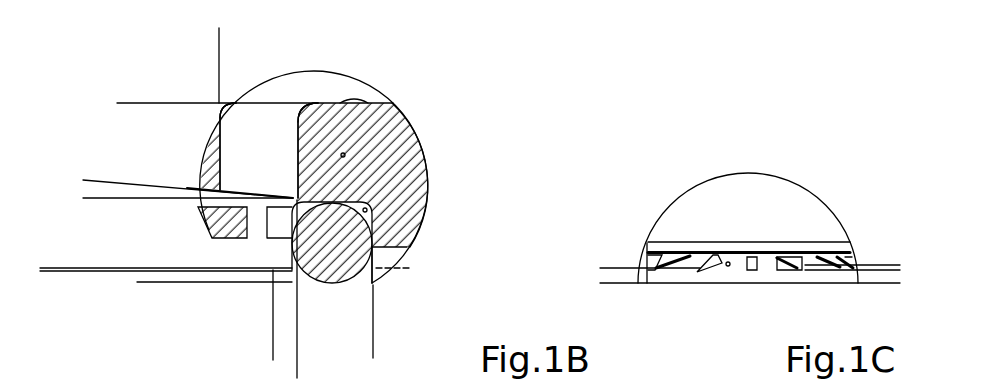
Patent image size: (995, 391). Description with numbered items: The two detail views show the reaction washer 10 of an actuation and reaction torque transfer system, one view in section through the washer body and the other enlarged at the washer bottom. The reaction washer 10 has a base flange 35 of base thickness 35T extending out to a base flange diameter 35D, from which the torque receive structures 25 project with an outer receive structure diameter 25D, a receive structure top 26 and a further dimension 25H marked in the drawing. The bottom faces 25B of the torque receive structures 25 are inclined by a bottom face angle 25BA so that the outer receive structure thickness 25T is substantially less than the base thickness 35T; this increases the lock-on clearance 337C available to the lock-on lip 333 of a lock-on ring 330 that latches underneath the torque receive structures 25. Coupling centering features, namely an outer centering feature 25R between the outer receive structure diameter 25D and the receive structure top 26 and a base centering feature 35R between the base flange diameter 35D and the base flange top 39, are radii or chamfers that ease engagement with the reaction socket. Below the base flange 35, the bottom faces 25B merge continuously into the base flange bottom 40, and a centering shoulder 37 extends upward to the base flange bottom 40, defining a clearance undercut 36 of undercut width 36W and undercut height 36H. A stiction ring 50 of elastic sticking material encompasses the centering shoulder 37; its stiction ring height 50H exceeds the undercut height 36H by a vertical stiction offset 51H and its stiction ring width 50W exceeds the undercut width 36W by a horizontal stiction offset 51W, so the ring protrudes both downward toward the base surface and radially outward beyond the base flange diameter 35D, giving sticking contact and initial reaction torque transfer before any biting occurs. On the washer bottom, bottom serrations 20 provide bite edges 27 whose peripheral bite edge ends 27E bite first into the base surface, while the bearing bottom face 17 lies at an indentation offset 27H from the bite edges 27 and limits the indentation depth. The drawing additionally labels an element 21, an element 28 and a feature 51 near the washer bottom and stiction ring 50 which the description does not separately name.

In FIG. 1B, the reaction washer 10 is at (405, 178).
In FIG. 1C, the reaction washer 10 is at (723, 207).
In FIG. 1B, the bearing bottom face 17 is at (395, 268).
In FIG. 1C, the bearing bottom face 17 is at (768, 257).
In FIG. 1C, the bottom serrations 20 is at (655, 305).
In FIG. 1C, the reflector plate 21 is at (838, 192).
In FIG. 1B, the torque receive structures 25 is at (226, 103).
In FIG. 1B, the bottom faces 25B is at (238, 222).
In FIG. 1B, the outer centering feature 25R is at (192, 77).
In FIG. 1B, the receive structure top 26 is at (258, 103).
In FIG. 1B, the bite edges 27 is at (376, 268).
In FIG. 1C, the bite edges 27 is at (757, 265).
In FIG. 1B, the peripheral bite edge ends 27E is at (378, 273).
In FIG. 1C, the peripheral bite edge ends 27E is at (745, 255).
In FIG. 1B, the pin 28 is at (405, 250).
In FIG. 1C, the pin 28 is at (728, 268).
In FIG. 1B, the base flange 35 is at (350, 132).
In FIG. 1B, the base centering feature 35R is at (315, 103).
In FIG. 1B, the clearance undercut 36 is at (395, 200).
In FIG. 1B, the centering shoulder 37 is at (383, 212).
In FIG. 1B, the base flange top 39 is at (343, 103).
In FIG. 1B, the base flange bottom 40 is at (407, 142).
In FIG. 1B, the stiction ring 50 is at (373, 281).
In FIG. 1C, the stiction ring 50 is at (840, 277).
In FIG. 1C, the base plate 51 is at (750, 275).
In FIG. 1B, the lock-on ring 330 is at (208, 226).
In FIG. 1B, the lock-on lip 333 is at (243, 212).
In FIG. 1B, the lock-on clearance 337C is at (272, 107).
In FIG. 1B, the outer receive structure diameter 25D is at (220, 37).
In FIG. 1B, the holder height 25H is at (121, 268).
In FIG. 1B, the outer receive structure thickness 25T is at (190, 103).
In FIG. 1B, the base thickness 35T is at (160, 103).
In FIG. 1B, the bottom face angle 25BA is at (86, 232).
In FIG. 1B, the indentation offset 27H is at (45, 245).
In FIG. 1C, the indentation offset 27H is at (897, 300).
In FIG. 1B, the vertical stiction offset 51H is at (142, 250).
In FIG. 1C, the vertical stiction offset 51H is at (602, 310).
In FIG. 1B, the undercut height 36H is at (253, 207).
In FIG. 1B, the stiction ring height 50H is at (332, 283).
In FIG. 1B, the horizontal stiction offset 51W is at (250, 313).
In FIG. 1B, the undercut width 36W is at (371, 344).
In FIG. 1B, the stiction ring width 50W is at (297, 353).
In FIG. 1B, the base flange diameter 35D is at (297, 371).